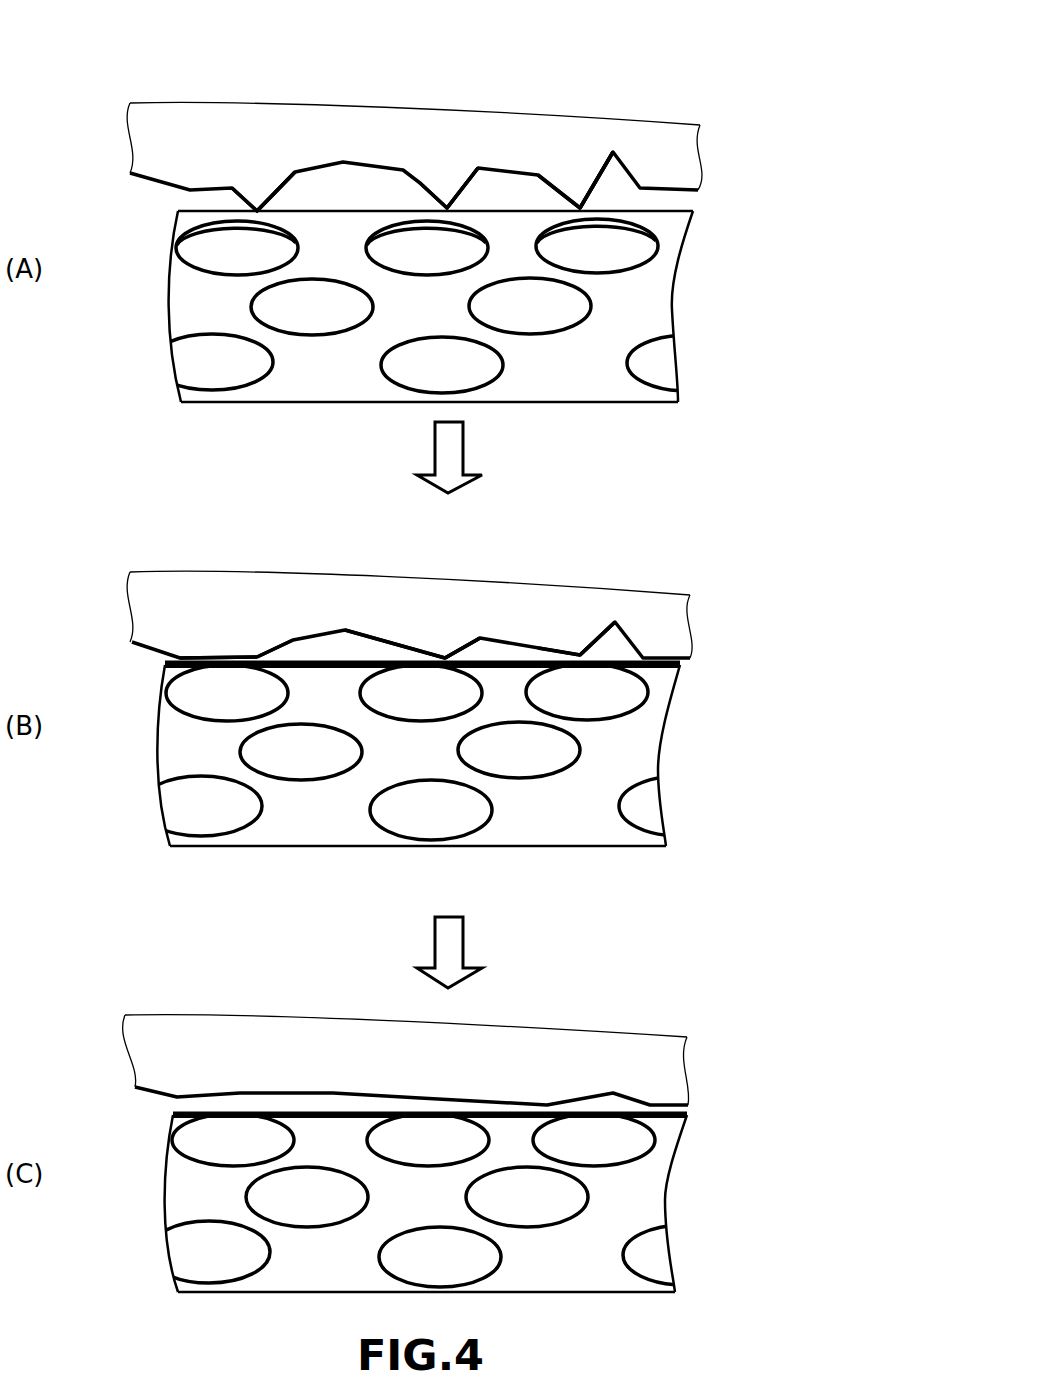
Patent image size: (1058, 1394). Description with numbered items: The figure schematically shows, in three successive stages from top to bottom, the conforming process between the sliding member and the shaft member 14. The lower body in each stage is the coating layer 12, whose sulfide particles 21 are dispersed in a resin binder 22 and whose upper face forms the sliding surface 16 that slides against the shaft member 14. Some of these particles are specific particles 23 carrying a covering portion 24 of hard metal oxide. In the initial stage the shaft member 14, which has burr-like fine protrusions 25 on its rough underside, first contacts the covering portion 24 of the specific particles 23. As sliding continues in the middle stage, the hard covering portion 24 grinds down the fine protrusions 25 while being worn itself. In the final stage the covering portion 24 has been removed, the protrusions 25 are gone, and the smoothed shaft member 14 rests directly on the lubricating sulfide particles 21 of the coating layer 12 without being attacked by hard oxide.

The coating layer 12 is at (680, 318).
The shaft member 14 is at (663, 142).
The sliding surface 16 is at (217, 210).
The sulfide particles 21 is at (208, 362).
The resin binder 22 is at (205, 301).
The specific particles 23 is at (282, 247).
The covering portion 24 is at (255, 208).
The fine protrusions 25 is at (270, 200).